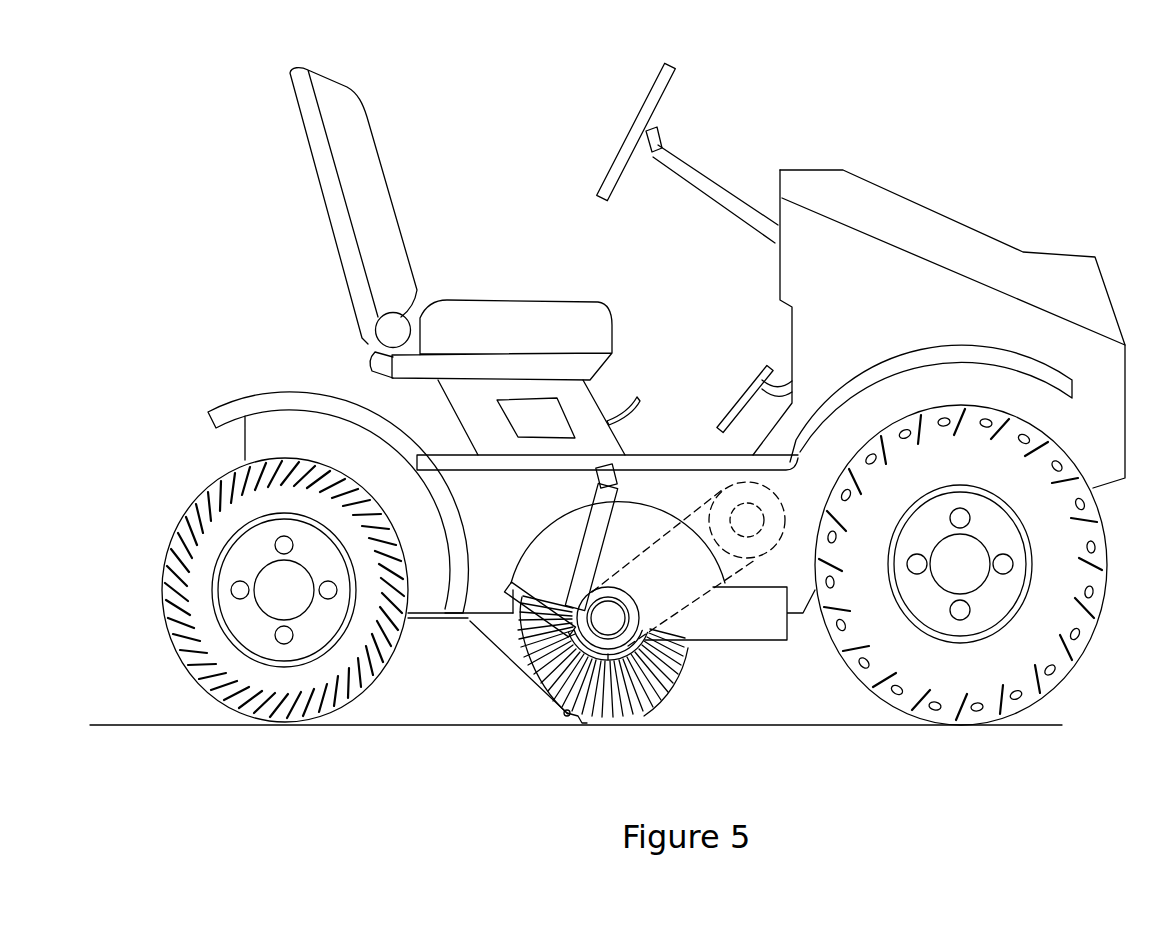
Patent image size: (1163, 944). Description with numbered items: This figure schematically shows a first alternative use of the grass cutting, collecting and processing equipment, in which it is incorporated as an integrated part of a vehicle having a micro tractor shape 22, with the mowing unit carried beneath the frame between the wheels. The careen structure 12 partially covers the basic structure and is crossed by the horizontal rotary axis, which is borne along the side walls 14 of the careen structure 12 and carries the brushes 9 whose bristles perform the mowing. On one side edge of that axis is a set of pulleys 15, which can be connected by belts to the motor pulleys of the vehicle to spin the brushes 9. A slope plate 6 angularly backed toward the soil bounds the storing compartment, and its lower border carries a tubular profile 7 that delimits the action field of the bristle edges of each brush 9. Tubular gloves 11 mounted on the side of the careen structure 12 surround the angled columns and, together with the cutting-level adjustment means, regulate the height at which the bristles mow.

The micro tractor shape 22 is at (1047, 205).
The tubular gloves 11 is at (594, 526).
The set of pulleys 15 is at (638, 618).
The brushes 9 is at (630, 661).
The slope plate 6 is at (530, 657).
The tubular profile 7 is at (582, 723).
The careen structure 12 is at (537, 573).
The side walls 14 is at (523, 568).